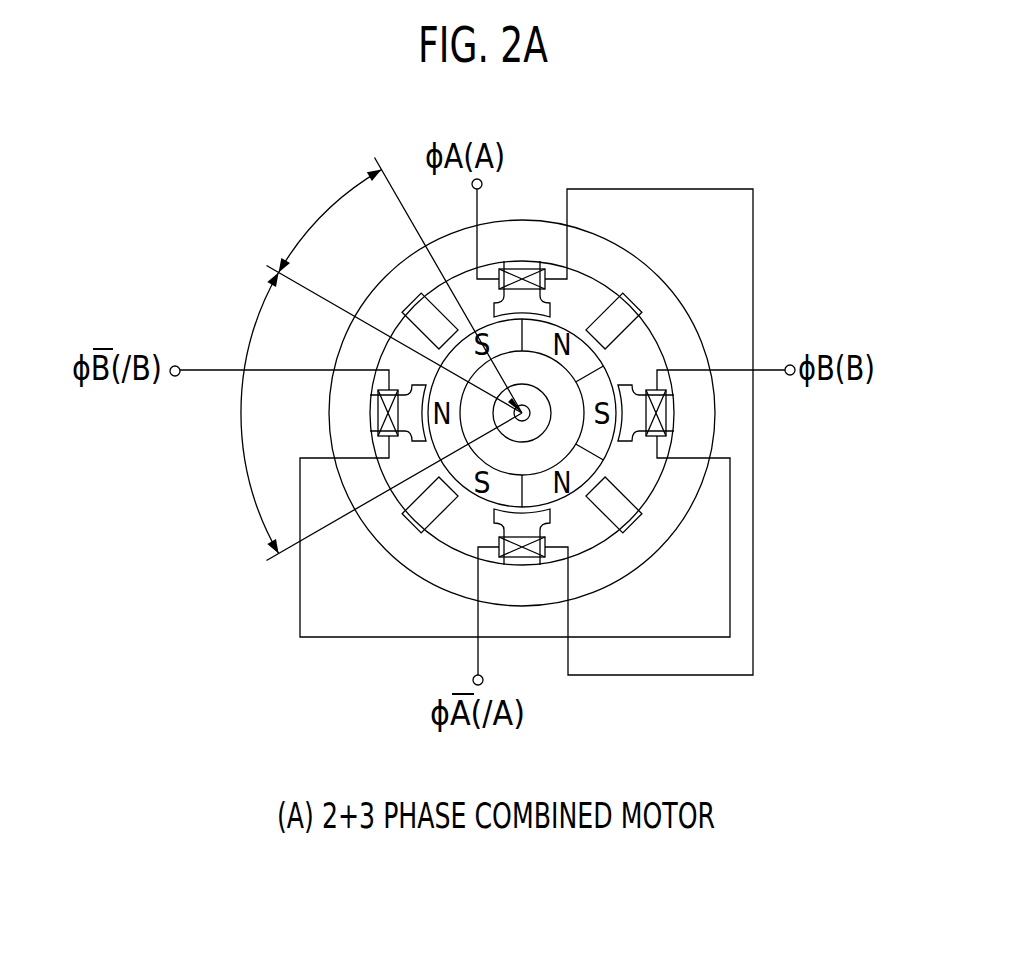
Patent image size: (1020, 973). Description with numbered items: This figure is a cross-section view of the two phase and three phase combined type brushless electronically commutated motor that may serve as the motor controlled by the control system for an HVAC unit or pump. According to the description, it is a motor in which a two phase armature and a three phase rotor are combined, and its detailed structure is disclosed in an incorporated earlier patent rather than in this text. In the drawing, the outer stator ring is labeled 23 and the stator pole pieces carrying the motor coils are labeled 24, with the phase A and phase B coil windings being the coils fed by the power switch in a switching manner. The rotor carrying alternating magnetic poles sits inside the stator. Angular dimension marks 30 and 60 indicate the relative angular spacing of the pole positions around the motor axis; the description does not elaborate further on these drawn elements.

The stator yoke 23 is at (668, 312).
The stator pole (magnetic pole) 24 is at (605, 280).
The 30 degree angle between pole positions 30 is at (330, 221).
The 60 degree angle between pole positions 60 is at (237, 413).